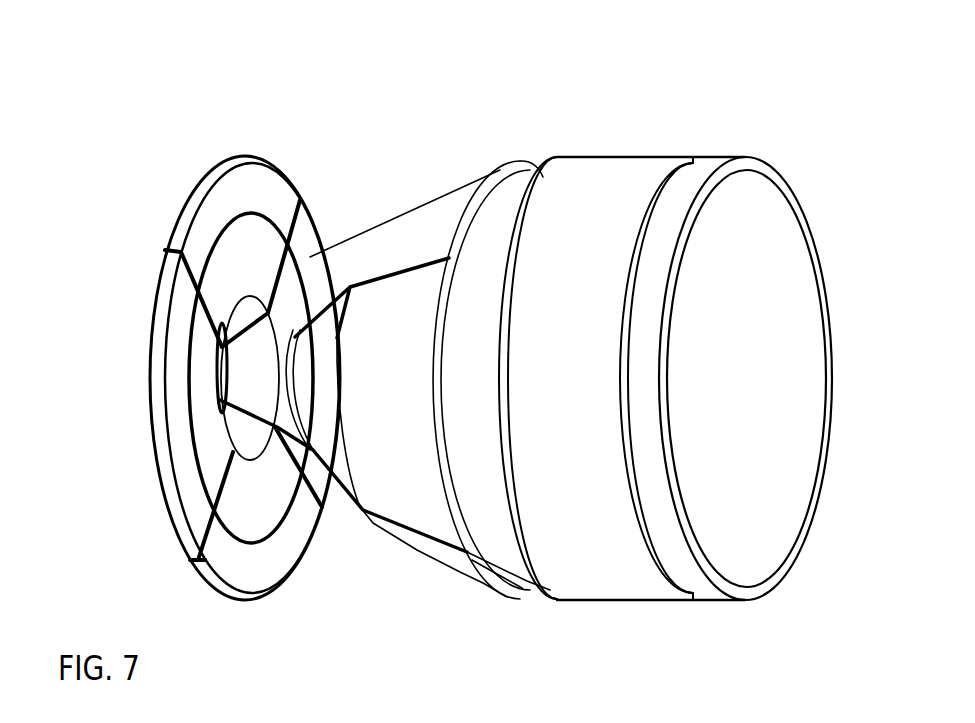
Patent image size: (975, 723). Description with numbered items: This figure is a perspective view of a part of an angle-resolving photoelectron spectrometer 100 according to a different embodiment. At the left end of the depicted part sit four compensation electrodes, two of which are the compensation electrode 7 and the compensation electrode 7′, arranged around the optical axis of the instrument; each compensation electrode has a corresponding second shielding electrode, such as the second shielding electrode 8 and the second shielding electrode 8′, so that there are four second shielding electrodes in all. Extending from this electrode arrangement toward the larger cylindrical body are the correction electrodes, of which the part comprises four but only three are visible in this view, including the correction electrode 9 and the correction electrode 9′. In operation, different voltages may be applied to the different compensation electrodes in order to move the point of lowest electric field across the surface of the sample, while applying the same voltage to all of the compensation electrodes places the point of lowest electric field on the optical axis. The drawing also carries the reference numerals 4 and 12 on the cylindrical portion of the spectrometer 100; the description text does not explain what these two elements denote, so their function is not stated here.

The angle-resolving photoelectron spectrometer 100 is at (808, 112).
The cylindrical housing end rim 4 is at (530, 175).
The circumferential groove rings 12 is at (712, 157).
The correction electrode 9 is at (446, 200).
The correction electrode 9′ is at (396, 384).
The compensation electrode 7 is at (310, 257).
The compensation electrode 7′ is at (230, 193).
The second shielding electrode 8 is at (293, 312).
The second shielding electrode 8′ is at (235, 247).